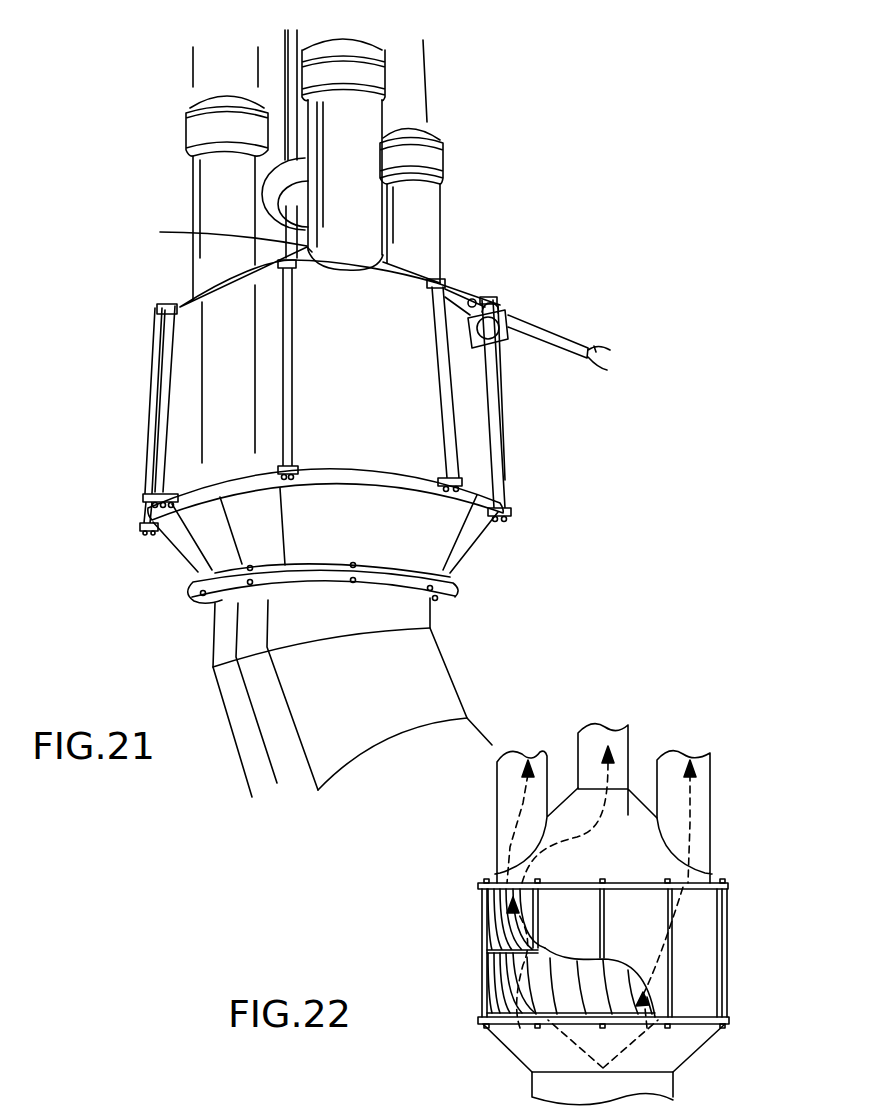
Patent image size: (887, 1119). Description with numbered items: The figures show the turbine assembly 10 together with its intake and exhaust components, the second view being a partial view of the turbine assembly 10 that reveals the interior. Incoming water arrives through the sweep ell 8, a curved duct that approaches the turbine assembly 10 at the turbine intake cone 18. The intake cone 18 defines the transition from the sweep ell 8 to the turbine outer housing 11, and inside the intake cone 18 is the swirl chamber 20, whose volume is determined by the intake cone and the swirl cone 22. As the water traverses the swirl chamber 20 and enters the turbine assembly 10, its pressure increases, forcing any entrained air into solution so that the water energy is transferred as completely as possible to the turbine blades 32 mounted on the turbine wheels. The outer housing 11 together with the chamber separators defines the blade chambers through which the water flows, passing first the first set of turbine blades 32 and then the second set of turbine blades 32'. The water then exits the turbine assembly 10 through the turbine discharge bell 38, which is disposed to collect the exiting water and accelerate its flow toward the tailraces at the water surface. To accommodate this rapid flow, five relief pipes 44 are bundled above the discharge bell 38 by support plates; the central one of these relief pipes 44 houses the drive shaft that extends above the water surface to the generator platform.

In FIG. 21, the relief pipe 44 is at (195, 197).
In FIG. 21, the turbine discharge bell 38 is at (162, 233).
In FIG. 22, the turbine discharge bell 38 is at (633, 790).
In FIG. 21, the turbine assembly 10 is at (140, 387).
In FIG. 22, the turbine assembly 10 is at (748, 962).
In FIG. 21, the turbine outer housing 11 is at (187, 465).
In FIG. 22, the turbine outer housing 11 is at (707, 923).
In FIG. 21, the turbine intake cone 18 is at (483, 540).
In FIG. 22, the turbine intake cone 18 is at (700, 1038).
In FIG. 21, the sweep ell 8 is at (453, 680).
In FIG. 22, the sweep ell 8 is at (673, 1088).
In FIG. 22, the second set of turbine blades 32' is at (471, 912).
In FIG. 22, the turbine blades 32 is at (466, 973).
In FIG. 22, the swirl chamber 20 is at (516, 1052).
In FIG. 22, the swirl cone 22 is at (578, 1047).